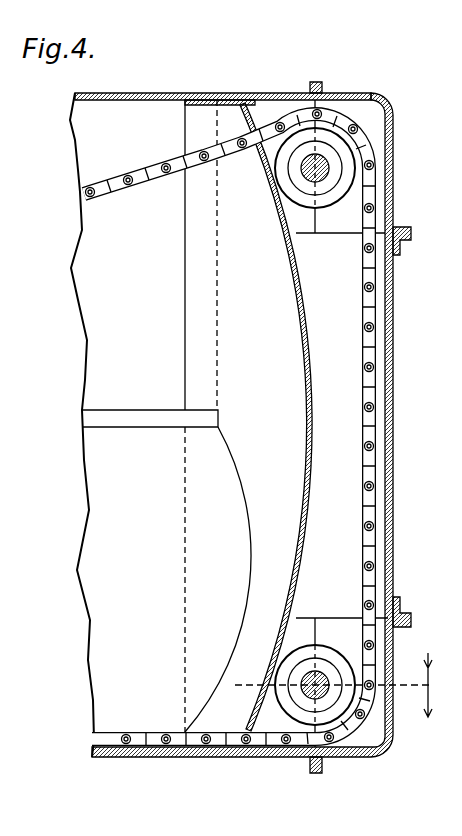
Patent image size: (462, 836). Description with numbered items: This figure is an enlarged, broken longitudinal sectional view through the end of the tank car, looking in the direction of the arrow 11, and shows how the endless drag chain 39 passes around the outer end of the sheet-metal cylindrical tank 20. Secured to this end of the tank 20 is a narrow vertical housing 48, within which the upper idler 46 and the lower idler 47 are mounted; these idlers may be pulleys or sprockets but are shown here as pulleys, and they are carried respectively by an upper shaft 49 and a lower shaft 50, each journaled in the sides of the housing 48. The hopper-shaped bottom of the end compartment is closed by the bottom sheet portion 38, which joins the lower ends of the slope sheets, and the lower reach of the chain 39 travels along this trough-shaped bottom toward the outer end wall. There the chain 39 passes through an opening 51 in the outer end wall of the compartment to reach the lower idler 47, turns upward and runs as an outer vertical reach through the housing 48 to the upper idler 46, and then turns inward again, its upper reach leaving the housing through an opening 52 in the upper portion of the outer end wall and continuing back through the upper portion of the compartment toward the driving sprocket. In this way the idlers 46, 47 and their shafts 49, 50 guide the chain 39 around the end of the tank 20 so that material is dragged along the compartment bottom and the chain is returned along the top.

The section line arrow 11 is at (443, 685).
The cylindrical tank 20 is at (152, 93).
The bottom sheet portion 38 is at (174, 745).
The endless drag chain 39 is at (120, 185).
The upper idler 46 is at (345, 165).
The lower idler 47 is at (345, 697).
The vertical housing 48 is at (393, 405).
The upper idler shaft 49 is at (317, 165).
The lower idler shaft 50 is at (323, 698).
The opening in outer end wall 51 is at (286, 745).
The opening in upper portion of outer end wall 52 is at (255, 108).